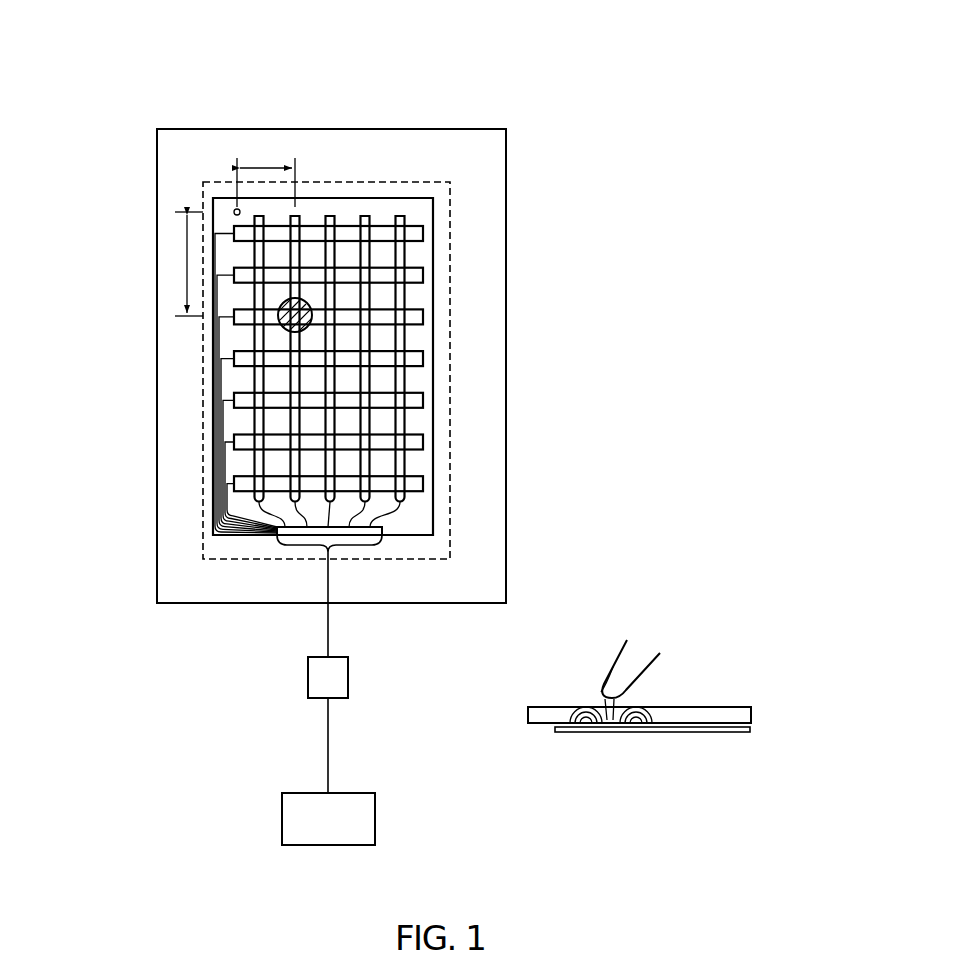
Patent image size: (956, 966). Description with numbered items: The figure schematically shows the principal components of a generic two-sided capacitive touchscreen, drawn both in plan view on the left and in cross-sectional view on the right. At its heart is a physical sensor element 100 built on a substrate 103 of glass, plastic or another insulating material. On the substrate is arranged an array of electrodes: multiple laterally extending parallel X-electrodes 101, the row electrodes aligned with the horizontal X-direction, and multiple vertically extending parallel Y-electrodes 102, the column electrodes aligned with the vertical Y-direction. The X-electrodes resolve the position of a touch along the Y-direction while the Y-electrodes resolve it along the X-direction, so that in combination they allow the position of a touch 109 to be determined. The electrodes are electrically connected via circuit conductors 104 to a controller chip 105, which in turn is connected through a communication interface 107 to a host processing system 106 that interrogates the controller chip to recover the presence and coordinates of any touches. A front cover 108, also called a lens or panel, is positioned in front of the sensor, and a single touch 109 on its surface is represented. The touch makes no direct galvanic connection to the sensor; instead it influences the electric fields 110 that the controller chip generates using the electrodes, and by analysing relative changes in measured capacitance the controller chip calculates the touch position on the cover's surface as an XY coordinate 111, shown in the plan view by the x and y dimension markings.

The sensor element 100 is at (450, 337).
The X-electrodes 101 is at (426, 233).
The Y-electrodes 102 is at (330, 216).
The substrate 103 is at (433, 487).
The circuit conductors 104 is at (326, 633).
The controller chip 105 is at (308, 683).
The host processing system 106 is at (282, 825).
The communication interface 107 is at (328, 742).
The front cover 108 is at (484, 129).
The touch 109 is at (281, 325).
The electric fields 110 is at (573, 712).
The XY coordinate 111 is at (258, 148).